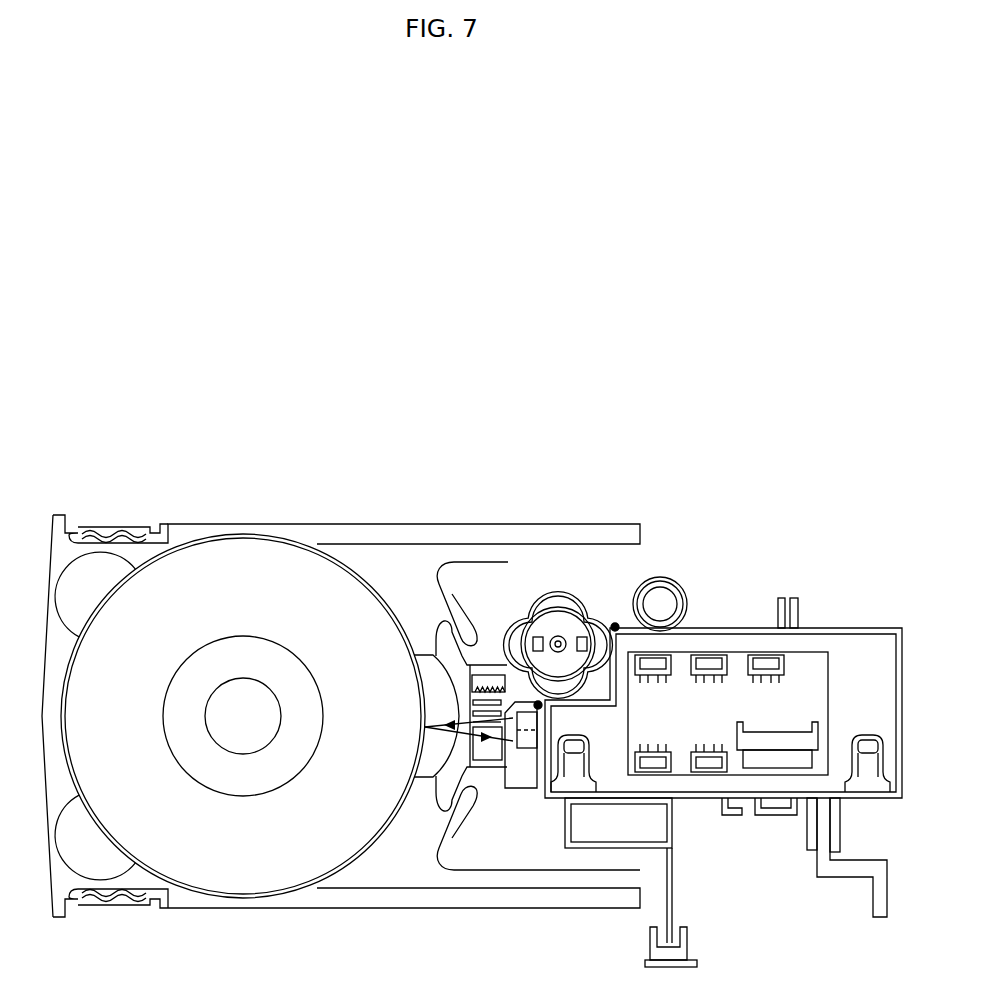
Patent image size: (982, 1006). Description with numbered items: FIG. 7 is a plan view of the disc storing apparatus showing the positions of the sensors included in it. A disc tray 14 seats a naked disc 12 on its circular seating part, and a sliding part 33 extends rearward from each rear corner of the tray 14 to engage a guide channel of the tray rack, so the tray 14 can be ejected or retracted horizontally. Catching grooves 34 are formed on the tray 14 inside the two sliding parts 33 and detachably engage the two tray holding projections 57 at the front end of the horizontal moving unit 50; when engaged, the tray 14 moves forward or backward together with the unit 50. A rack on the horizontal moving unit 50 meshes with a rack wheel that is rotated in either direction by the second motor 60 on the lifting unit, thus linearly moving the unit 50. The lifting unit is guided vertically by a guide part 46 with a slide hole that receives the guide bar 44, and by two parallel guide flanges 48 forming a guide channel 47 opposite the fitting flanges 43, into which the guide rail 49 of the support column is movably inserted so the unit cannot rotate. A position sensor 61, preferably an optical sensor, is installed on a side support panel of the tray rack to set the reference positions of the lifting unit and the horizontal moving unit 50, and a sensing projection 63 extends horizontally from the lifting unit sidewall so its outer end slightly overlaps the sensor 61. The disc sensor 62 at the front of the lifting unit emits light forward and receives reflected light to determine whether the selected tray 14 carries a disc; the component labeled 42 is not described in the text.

The disc tray 14 is at (182, 518).
The naked disc 12 is at (234, 878).
The sliding part 33 is at (397, 893).
The catching groove 34 is at (440, 630).
The tray holding projection 57 is at (452, 645).
The horizontal moving unit 50 is at (488, 650).
The second motor 60 is at (558, 614).
The disc sensor 62 is at (528, 742).
The guide part 46 is at (664, 600).
The guide bar 44 is at (668, 608).
The circuit board housing 42 is at (786, 598).
The fitting flange 43 is at (798, 618).
The sensing projection 63 is at (673, 882).
The position sensor 61 is at (684, 944).
The guide channel 47 is at (820, 808).
The guide flange 48 is at (838, 828).
The guide rail 49 is at (824, 862).